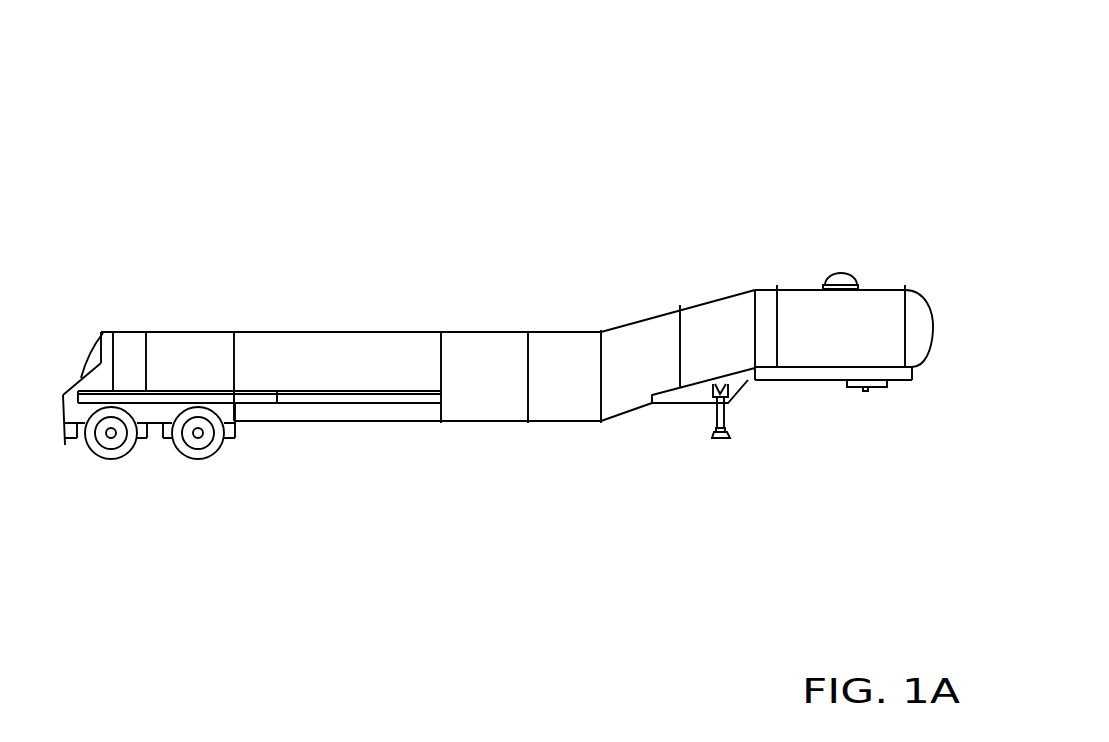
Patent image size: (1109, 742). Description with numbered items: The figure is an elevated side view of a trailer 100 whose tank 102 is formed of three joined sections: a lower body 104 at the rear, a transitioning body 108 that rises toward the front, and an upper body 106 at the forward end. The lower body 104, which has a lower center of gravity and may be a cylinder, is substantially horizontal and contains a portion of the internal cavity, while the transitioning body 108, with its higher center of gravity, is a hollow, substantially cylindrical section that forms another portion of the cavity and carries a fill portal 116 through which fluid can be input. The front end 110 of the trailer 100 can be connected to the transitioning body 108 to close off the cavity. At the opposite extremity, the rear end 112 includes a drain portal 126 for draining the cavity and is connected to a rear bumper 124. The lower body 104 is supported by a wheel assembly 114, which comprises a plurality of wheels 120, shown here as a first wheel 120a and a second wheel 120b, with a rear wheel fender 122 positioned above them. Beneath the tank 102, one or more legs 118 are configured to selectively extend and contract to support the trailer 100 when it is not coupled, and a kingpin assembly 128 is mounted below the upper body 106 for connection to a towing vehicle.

The trailer 100 is at (650, 115).
The tank 102 is at (326, 337).
The lower body 104 is at (203, 358).
The upper body 106 is at (800, 315).
The transitioning body 108 is at (650, 345).
The front end 110 is at (920, 357).
The rear end 112 is at (101, 332).
The wheel assembly 114 is at (230, 438).
The portal 116 is at (857, 285).
The one or more legs 118 is at (715, 413).
The plurality of wheels 120 is at (262, 515).
The first wheel 120a is at (207, 452).
The second wheel 120b is at (128, 453).
The rear wheel fender 122 is at (406, 403).
The rear bumper 124 is at (65, 445).
The drain portal 126 is at (86, 374).
The kingpin assembly 128 is at (857, 388).